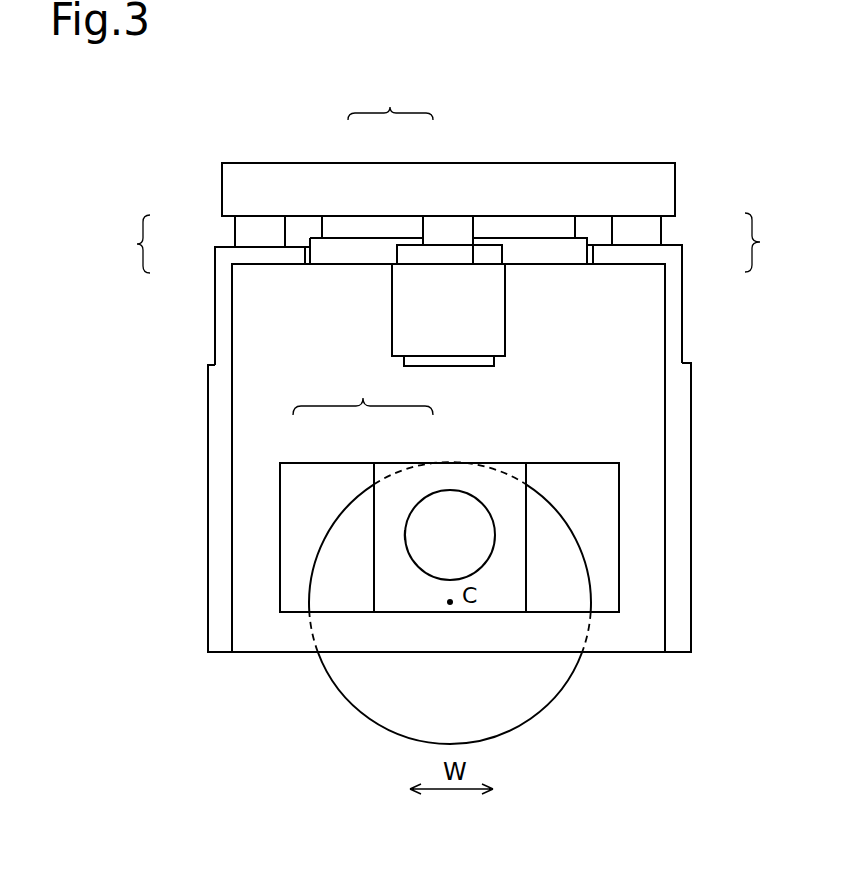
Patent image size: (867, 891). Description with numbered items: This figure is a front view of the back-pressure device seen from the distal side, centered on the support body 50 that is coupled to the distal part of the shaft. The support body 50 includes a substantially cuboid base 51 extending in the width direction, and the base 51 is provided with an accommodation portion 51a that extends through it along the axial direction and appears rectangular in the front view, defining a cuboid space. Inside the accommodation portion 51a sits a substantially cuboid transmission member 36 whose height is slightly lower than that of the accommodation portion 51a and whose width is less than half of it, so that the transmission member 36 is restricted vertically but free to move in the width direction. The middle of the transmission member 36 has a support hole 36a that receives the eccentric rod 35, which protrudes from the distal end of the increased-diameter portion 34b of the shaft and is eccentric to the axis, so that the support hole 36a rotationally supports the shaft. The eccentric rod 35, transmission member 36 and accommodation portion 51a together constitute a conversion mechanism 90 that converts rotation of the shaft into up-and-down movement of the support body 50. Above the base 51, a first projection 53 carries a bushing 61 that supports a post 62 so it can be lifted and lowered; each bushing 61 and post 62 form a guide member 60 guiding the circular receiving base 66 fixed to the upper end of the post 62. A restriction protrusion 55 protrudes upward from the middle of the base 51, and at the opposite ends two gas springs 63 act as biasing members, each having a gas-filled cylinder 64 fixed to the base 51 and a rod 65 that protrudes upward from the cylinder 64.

The receiving base 66 is at (675, 184).
The rod 65 is at (235, 229).
The cylinder 64 is at (215, 256).
The gas spring 63 is at (448, 243).
The guide member 60 is at (390, 98).
The bushing 61 is at (322, 227).
The post 62 is at (426, 228).
The restriction protrusion 55 is at (518, 237).
The first projection 53 is at (505, 303).
The support body 50 is at (701, 393).
The base 51 is at (692, 535).
The conversion mechanism 90 is at (363, 392).
The accommodation portion 51a is at (318, 470).
The transmission member 36 is at (374, 468).
The eccentric rod 35 is at (428, 494).
The support hole 36a is at (405, 540).
The increased-diameter portion 34b is at (553, 700).